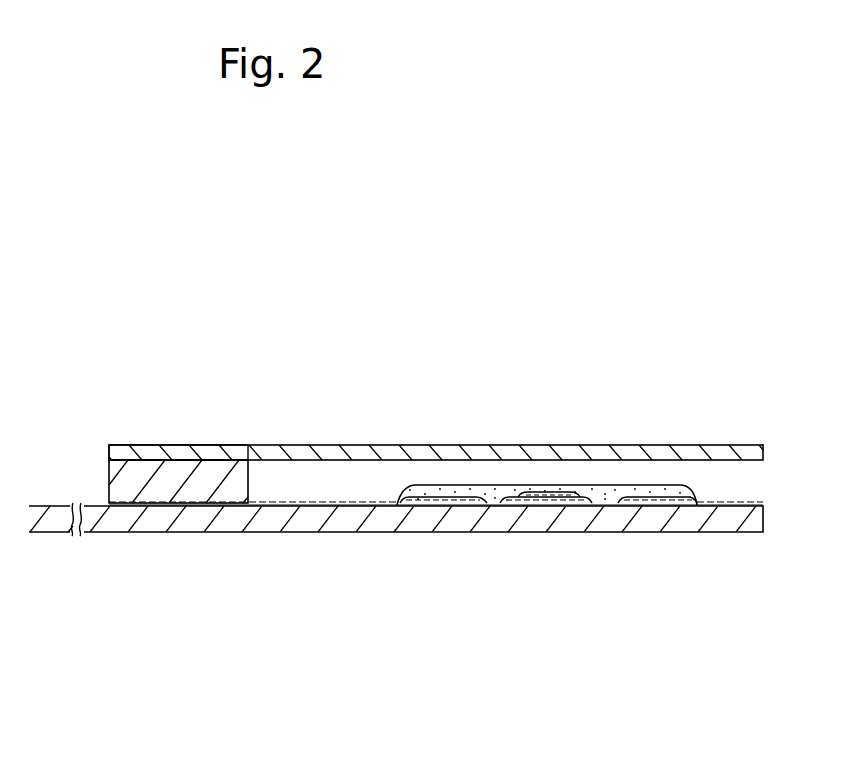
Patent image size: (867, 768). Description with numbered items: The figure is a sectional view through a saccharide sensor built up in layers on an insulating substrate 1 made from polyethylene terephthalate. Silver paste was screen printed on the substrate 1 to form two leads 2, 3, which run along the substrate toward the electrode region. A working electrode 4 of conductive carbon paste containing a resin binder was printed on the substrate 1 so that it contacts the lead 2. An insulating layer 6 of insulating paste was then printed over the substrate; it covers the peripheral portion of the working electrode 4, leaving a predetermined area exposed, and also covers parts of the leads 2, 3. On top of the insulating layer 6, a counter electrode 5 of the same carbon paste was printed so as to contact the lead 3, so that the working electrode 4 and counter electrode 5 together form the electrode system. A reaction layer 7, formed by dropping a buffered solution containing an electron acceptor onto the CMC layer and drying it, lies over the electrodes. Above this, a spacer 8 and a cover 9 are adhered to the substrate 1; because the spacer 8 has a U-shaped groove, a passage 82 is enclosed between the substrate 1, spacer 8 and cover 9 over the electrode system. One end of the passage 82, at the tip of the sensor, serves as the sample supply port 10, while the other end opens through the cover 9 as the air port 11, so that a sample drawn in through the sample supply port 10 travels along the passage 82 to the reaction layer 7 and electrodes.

The insulating substrate 1 is at (101, 595).
The lead 2 is at (548, 500).
The lead 3 is at (650, 500).
The working electrode 4 is at (536, 497).
The counter electrode 5 is at (662, 487).
The insulating layer 6 is at (730, 503).
The reaction layer 7 is at (558, 497).
The spacer 8 is at (120, 485).
The cover 9 is at (183, 453).
The sample supply port 10 is at (759, 478).
The air port 11 is at (297, 452).
The passage 82 is at (675, 473).